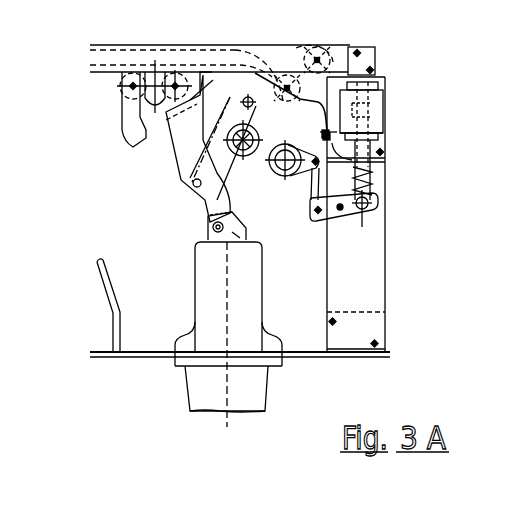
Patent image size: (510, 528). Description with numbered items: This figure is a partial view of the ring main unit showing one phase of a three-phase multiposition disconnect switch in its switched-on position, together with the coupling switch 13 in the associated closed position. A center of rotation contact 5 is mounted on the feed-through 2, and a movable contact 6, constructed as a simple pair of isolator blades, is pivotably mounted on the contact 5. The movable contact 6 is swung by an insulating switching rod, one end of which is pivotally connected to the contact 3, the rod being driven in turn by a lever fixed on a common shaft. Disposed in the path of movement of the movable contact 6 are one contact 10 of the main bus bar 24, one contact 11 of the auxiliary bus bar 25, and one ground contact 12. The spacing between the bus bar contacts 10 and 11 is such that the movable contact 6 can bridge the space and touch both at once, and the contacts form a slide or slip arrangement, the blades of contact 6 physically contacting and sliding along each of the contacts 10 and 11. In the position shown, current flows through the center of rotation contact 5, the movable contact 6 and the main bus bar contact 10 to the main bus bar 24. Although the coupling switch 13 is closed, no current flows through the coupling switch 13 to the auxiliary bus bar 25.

The feed-through 2 is at (204, 368).
The contact 3 is at (244, 430).
The center of rotation contact 5 is at (207, 242).
The movable contact 6 is at (146, 148).
The contact of the main bus bar 10 is at (115, 55).
The contact of the auxiliary bus bar 11 is at (109, 110).
The ground contact 12 is at (70, 305).
The coupling switch 13 is at (349, 137).
The main bus bar 24 is at (295, 55).
The auxiliary bus bar 25 is at (378, 74).